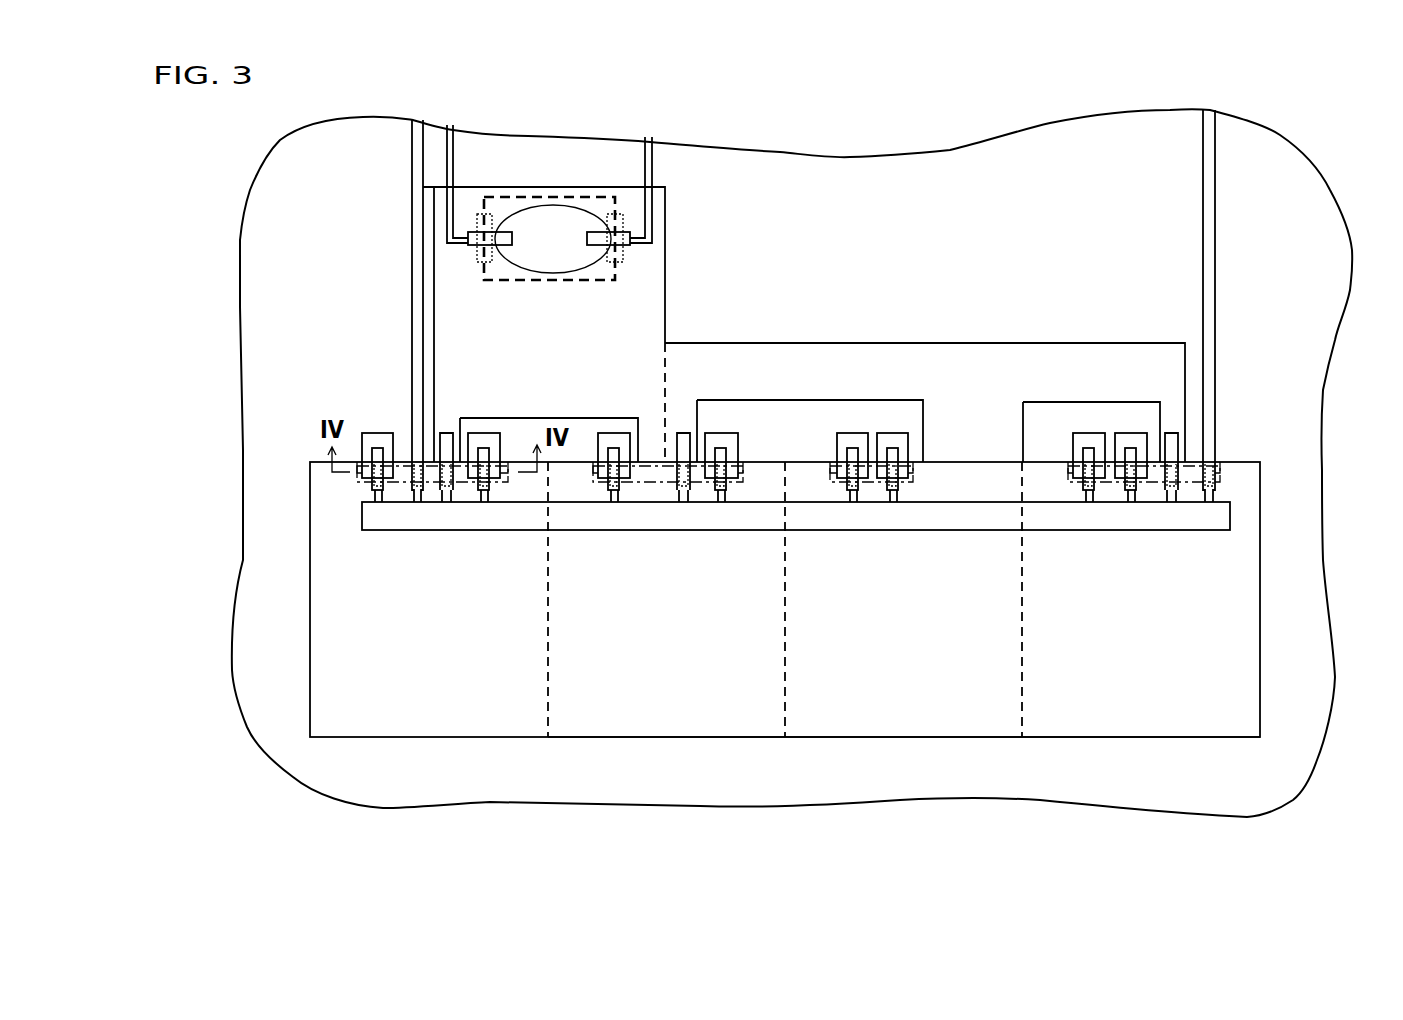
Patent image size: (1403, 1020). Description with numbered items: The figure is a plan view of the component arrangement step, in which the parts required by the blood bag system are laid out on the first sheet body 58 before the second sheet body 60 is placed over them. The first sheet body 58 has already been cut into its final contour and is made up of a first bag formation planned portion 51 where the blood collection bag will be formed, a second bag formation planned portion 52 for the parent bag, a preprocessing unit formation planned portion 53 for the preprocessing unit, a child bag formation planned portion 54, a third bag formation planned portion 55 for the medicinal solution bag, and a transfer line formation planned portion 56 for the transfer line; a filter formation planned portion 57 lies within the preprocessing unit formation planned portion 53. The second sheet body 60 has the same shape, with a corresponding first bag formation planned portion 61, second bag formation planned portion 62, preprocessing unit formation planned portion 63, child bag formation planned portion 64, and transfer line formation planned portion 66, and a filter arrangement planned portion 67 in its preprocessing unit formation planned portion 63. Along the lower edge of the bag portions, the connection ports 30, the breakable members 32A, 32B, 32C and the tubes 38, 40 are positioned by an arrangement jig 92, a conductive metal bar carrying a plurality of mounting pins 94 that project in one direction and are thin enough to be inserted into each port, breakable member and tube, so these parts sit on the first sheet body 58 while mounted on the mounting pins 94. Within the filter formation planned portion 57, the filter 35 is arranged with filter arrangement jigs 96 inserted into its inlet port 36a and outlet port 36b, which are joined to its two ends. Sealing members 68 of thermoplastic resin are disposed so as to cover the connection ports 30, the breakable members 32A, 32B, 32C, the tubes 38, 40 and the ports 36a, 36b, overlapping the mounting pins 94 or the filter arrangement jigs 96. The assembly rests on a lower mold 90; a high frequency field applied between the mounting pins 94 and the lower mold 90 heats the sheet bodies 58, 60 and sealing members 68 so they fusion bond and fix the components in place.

The connection port 30 is at (378, 445).
The breakable member 32A is at (448, 491).
The breakable member 32B is at (683, 491).
The breakable member 32C is at (1170, 491).
The filter 35 is at (553, 252).
The inlet port 36a is at (502, 244).
The outlet port 36b is at (598, 244).
The tube 38 is at (1203, 229).
The tube 40 is at (412, 294).
The first bag formation planned portion 51 is at (785, 624).
The second bag formation planned portion 52 is at (666, 624).
The preprocessing unit formation planned portion 53 is at (594, 324).
The child bag formation planned portion 54 is at (903, 624).
The third bag formation planned portion 55 is at (1141, 750).
The transfer line formation planned portion 56 is at (810, 376).
The filter formation planned portion 57 is at (549, 177).
The first sheet body 58 is at (925, 376).
The second sheet body 60 is at (839, 358).
The first bag formation planned portion 61 is at (432, 715).
The second bag formation planned portion 62 is at (667, 715).
The preprocessing unit formation planned portion 63 is at (645, 312).
The child bag formation planned portion 64 is at (905, 715).
The transfer line formation planned portion 66 is at (969, 383).
The filter arrangement planned portion 67 is at (577, 197).
The sealing member 68 is at (485, 218).
The lower mold 90 is at (258, 610).
The arrangement jig 92 is at (940, 512).
The mounting pin 94 is at (417, 503).
The filter arrangement jig 96 is at (455, 150).